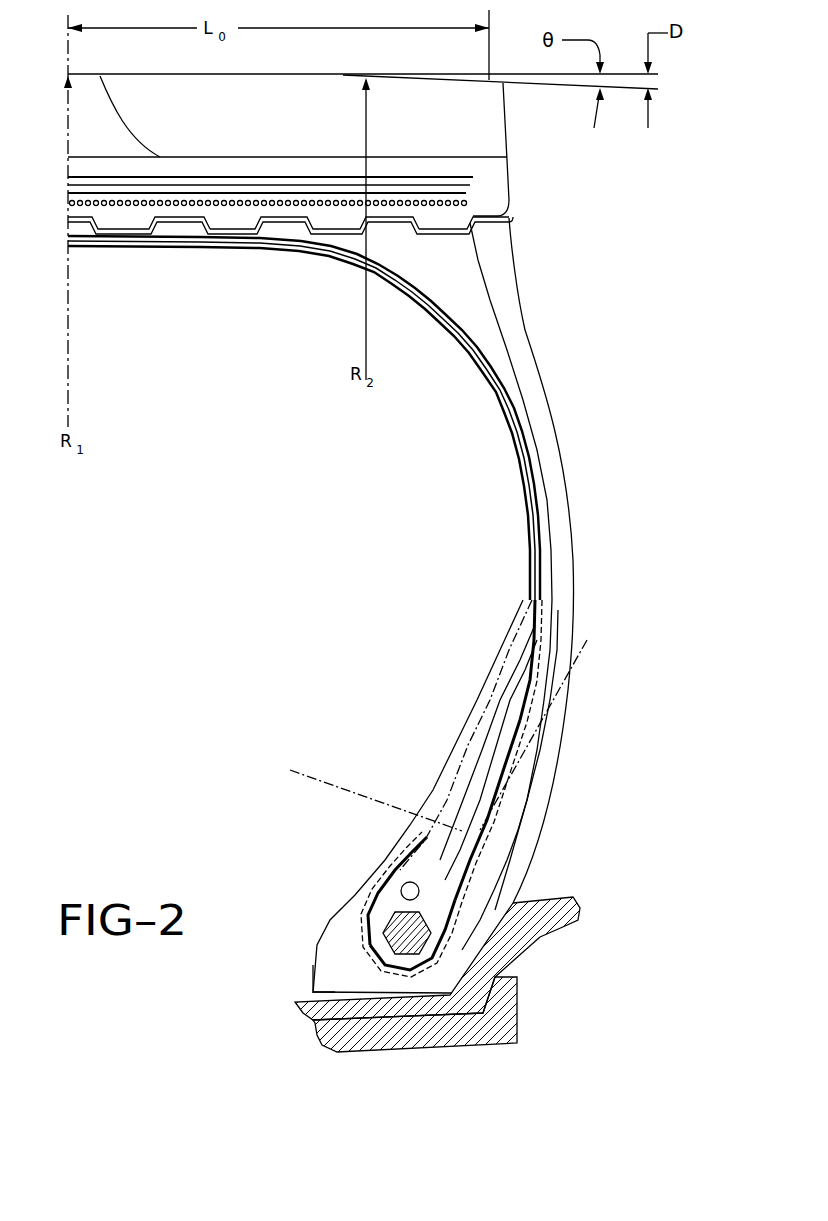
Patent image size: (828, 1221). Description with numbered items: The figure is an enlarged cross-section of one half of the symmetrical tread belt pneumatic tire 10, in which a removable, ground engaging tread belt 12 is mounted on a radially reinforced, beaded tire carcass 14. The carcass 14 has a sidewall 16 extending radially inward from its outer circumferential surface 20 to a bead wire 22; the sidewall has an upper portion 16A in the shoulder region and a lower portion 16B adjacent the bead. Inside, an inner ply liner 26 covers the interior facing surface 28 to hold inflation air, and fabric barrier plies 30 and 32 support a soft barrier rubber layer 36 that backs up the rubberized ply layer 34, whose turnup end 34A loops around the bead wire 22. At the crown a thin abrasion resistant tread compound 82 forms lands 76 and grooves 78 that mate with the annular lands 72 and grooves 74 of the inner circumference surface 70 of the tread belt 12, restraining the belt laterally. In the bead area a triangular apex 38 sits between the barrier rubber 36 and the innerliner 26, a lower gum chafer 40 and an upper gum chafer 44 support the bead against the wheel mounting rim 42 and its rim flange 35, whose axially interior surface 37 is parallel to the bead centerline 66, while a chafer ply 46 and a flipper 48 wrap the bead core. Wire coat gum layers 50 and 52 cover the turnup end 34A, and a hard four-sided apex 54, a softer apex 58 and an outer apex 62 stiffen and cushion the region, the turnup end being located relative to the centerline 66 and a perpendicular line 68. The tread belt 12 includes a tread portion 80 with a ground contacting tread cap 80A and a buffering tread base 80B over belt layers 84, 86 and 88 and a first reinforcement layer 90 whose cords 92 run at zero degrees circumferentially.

The tread belt pneumatic tire 10 is at (578, 472).
The tread belt 12 is at (503, 133).
The tire carcass 14 is at (533, 310).
The tire sidewall 16 is at (543, 387).
The upper sidewall portion 16A is at (512, 268).
The lower sidewall portion 16B is at (540, 797).
The outer circumferential surface 20 is at (492, 191).
The bead wire 22 is at (487, 1013).
The inner ply liner 26 is at (527, 600).
The interior facing surface 28 is at (492, 421).
The fabric barrier ply 30 is at (247, 245).
The fabric barrier ply 32 is at (163, 245).
The ply layer 34 is at (458, 325).
The turnup end 34A is at (497, 857).
The rim flange 35 is at (517, 953).
The barrier rubber layer 36 is at (90, 243).
The axially interior surface of rim flange 37 is at (535, 927).
The apex element 38 is at (493, 723).
The lower gum chafer 40 is at (343, 955).
The wheel mounting rim 42 is at (485, 1038).
The upper gum chafer 44 is at (525, 827).
The chafer ply 46 is at (305, 990).
The flipper 48 is at (392, 887).
The wire coat gum layer 50 is at (484, 830).
The wire coat gum layer 52 is at (487, 830).
The apex 54 is at (427, 840).
The apex 58 is at (530, 715).
The outer apex 62 is at (520, 765).
The centerline 66 is at (422, 868).
The line 68 is at (330, 783).
The inner circumference surface 70 is at (289, 213).
The annular land 72 is at (436, 220).
The groove 74 is at (399, 213).
The land 76 is at (296, 228).
The groove 78 is at (443, 233).
The tread portion 80 is at (296, 110).
The tread cap 80A is at (505, 140).
The tread base 80B is at (512, 190).
The abrasion resistant tread compound 82 is at (326, 228).
The tread belt layer 84 is at (237, 194).
The tread belt layer 86 is at (205, 186).
The third belt layer 88 is at (153, 178).
The first reinforcement layer 90 is at (122, 212).
The cords 92 is at (218, 208).